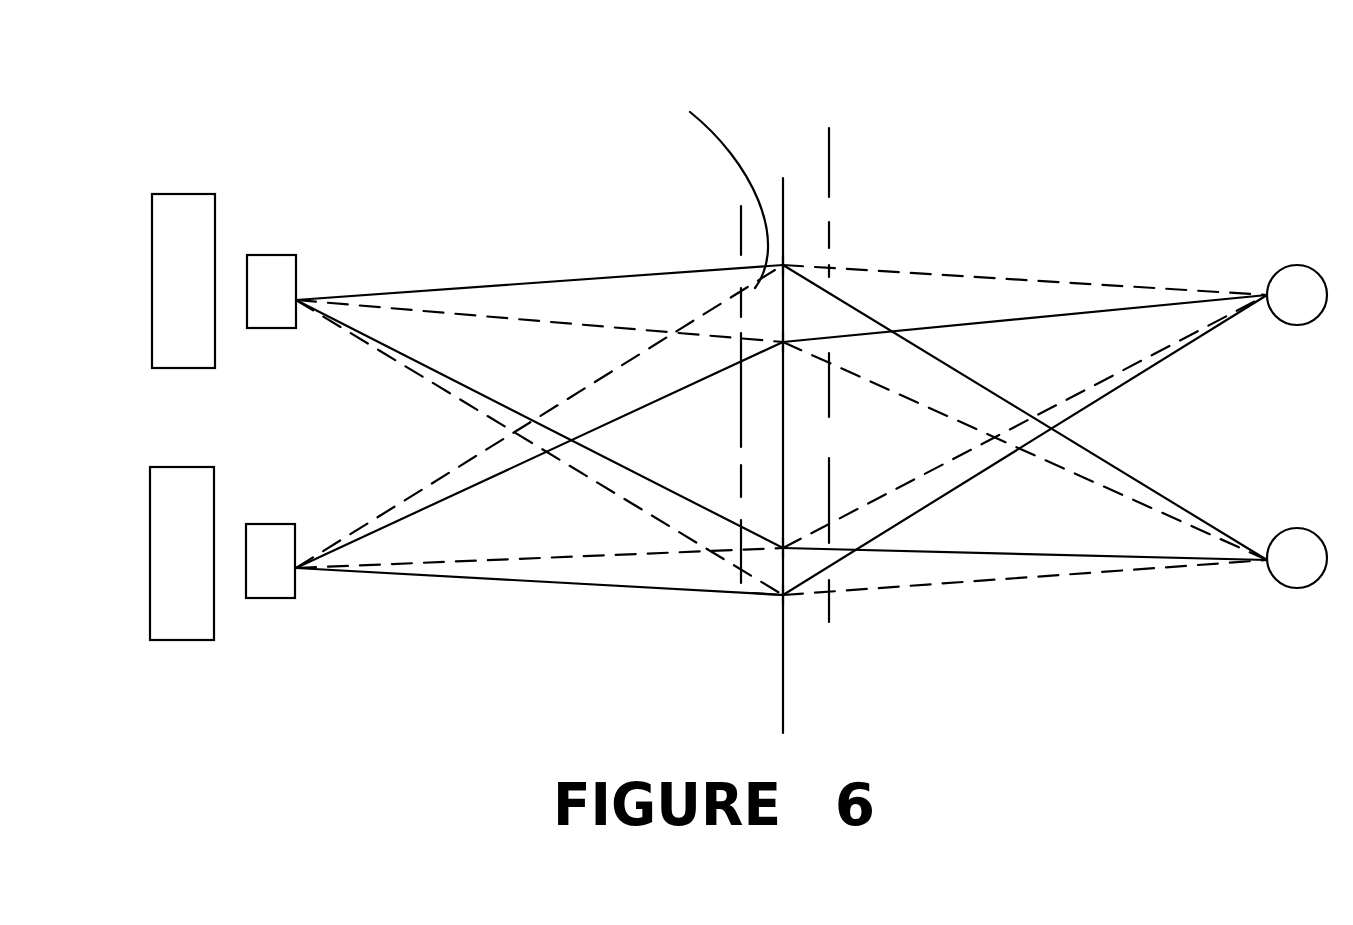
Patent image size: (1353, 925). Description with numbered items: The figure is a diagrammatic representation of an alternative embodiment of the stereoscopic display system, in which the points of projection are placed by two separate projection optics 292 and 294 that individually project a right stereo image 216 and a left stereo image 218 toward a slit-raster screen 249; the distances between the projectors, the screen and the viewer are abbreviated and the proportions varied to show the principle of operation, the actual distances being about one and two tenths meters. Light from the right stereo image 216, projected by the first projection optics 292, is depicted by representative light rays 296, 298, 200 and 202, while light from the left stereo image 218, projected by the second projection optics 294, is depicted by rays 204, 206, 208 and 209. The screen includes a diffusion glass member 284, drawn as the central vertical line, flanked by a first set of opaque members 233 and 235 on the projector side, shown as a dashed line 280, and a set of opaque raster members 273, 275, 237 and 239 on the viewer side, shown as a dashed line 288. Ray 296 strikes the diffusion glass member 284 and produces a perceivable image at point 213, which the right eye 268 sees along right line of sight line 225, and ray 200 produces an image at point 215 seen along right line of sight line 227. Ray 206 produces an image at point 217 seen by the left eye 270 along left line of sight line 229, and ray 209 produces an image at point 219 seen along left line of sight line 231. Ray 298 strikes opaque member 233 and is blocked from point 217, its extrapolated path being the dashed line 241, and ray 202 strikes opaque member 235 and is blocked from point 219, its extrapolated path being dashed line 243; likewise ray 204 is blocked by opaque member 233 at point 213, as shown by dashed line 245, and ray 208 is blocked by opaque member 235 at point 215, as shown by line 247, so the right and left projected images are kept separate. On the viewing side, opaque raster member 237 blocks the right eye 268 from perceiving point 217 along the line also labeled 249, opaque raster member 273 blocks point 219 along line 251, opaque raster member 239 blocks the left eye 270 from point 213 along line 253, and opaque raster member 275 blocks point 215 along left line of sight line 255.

The light ray 200 is at (473, 498).
The light ray 202 is at (402, 497).
The light ray 204 is at (393, 378).
The light ray 206 is at (473, 384).
The light ray 208 is at (522, 328).
The light ray 209 is at (528, 278).
The point 213 is at (783, 595).
The point 215 is at (785, 348).
The point 217 is at (781, 545).
The point 219 is at (787, 268).
The right stereo image 216 is at (164, 574).
The left stereo image 218 is at (164, 303).
The right line of sight line 225 is at (1080, 412).
The right line of sight line 227 is at (987, 330).
The left line of sight line 229 is at (1040, 543).
The left line of sight line 231 is at (1130, 468).
The opaque member 233 is at (738, 578).
The opaque member 235 is at (735, 310).
The opaque raster member 237 is at (833, 457).
The opaque raster member 239 is at (843, 615).
The dashed line 241 is at (757, 537).
The dashed line 243 is at (701, 192).
The dashed line 245 is at (753, 594).
The line 247 is at (749, 343).
The slit-raster screen 249 is at (810, 70).
The right line of sight line 251 is at (1018, 272).
The left line of sight line 253 is at (1103, 580).
The left line of sight line 255 is at (1060, 466).
The right eye 268 is at (1278, 305).
The left eye 270 is at (1278, 568).
The opaque raster member 273 is at (832, 243).
The opaque raster member 275 is at (828, 386).
The aperture plate 280 is at (740, 218).
The diffusion glass member 284 is at (783, 178).
The aperture plate 288 is at (840, 190).
The first projection optics 292 is at (252, 593).
The second projection optics 294 is at (253, 303).
The light ray 296 is at (514, 590).
The light ray 298 is at (600, 550).